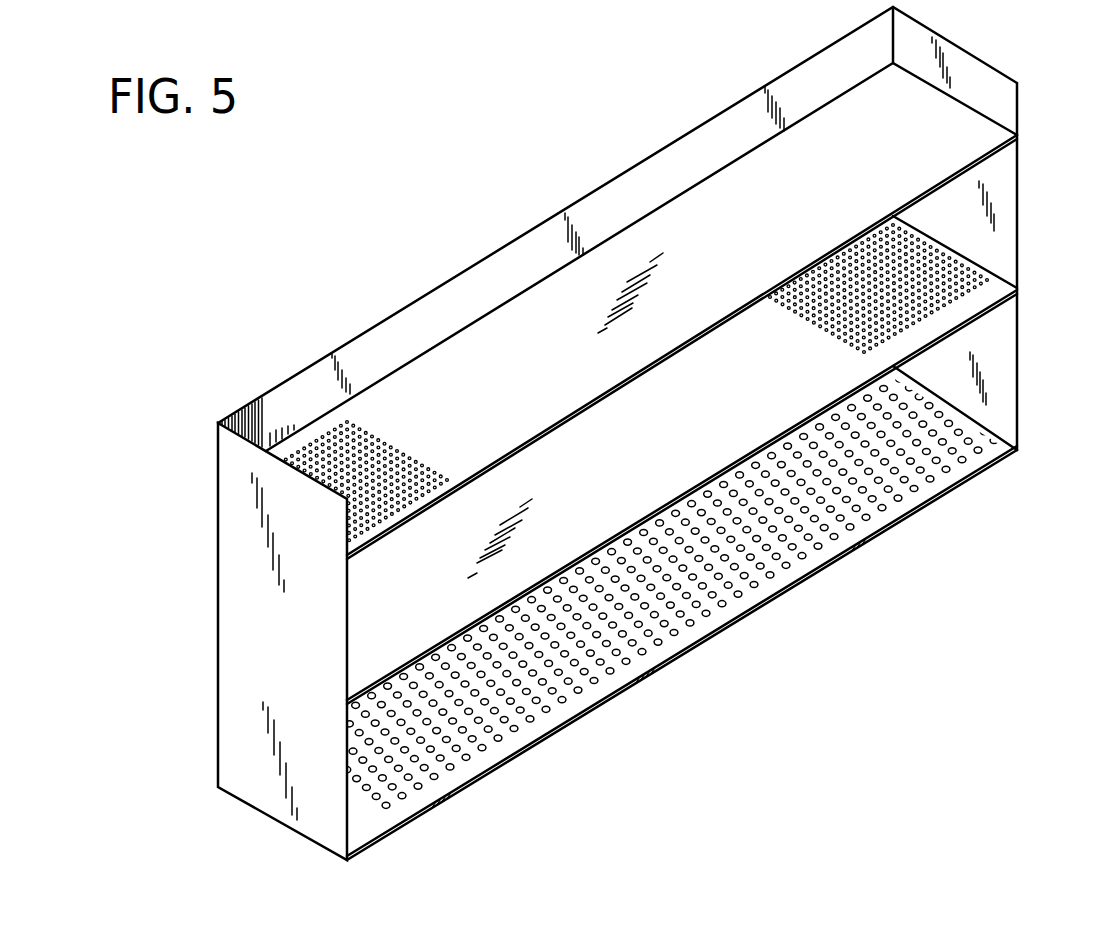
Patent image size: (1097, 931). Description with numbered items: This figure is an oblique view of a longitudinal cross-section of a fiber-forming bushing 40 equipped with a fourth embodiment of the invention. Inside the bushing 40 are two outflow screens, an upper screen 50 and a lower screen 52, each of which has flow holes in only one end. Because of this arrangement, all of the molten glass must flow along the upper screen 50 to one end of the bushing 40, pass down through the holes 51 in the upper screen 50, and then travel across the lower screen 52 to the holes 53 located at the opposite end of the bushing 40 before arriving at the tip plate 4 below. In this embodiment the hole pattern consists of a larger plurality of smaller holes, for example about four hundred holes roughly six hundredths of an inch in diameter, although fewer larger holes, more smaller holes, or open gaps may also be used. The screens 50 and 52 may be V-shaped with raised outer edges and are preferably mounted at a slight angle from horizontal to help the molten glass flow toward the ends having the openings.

The fiber-forming bushing 40 is at (218, 480).
The upper screen 50 is at (445, 392).
The holes in upper screen 51 is at (313, 443).
The holes in lower screen 53 is at (907, 287).
The lower screen 52 is at (388, 627).
The tip plate 4 is at (802, 566).